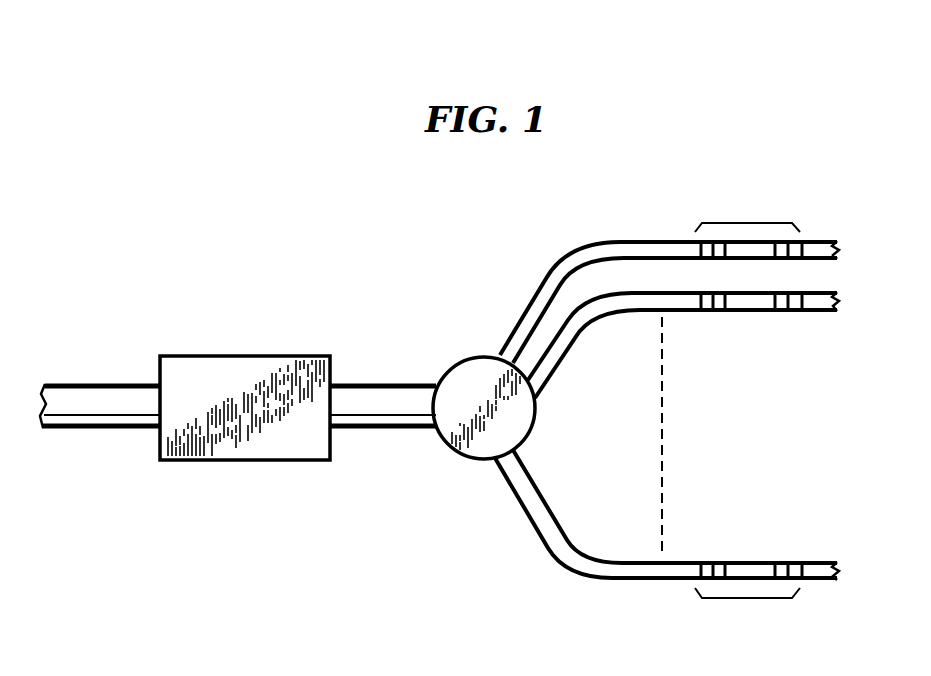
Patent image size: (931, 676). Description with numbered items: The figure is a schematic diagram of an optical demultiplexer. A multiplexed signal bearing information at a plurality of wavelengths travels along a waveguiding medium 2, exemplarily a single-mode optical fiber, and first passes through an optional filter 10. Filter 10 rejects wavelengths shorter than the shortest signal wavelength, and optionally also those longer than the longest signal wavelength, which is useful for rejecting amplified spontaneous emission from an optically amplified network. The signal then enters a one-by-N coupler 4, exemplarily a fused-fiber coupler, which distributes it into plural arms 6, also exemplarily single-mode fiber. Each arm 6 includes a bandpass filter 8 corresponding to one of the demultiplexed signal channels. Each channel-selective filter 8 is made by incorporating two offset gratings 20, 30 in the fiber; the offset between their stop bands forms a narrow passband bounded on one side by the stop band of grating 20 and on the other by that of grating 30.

The waveguiding medium 2 is at (90, 383).
The filter 10 is at (268, 356).
The 1×N coupler 4 is at (466, 359).
The arms 6 is at (826, 247).
The bandpass filter 8 is at (747, 222).
The grating 20 is at (720, 311).
The grating 30 is at (793, 311).